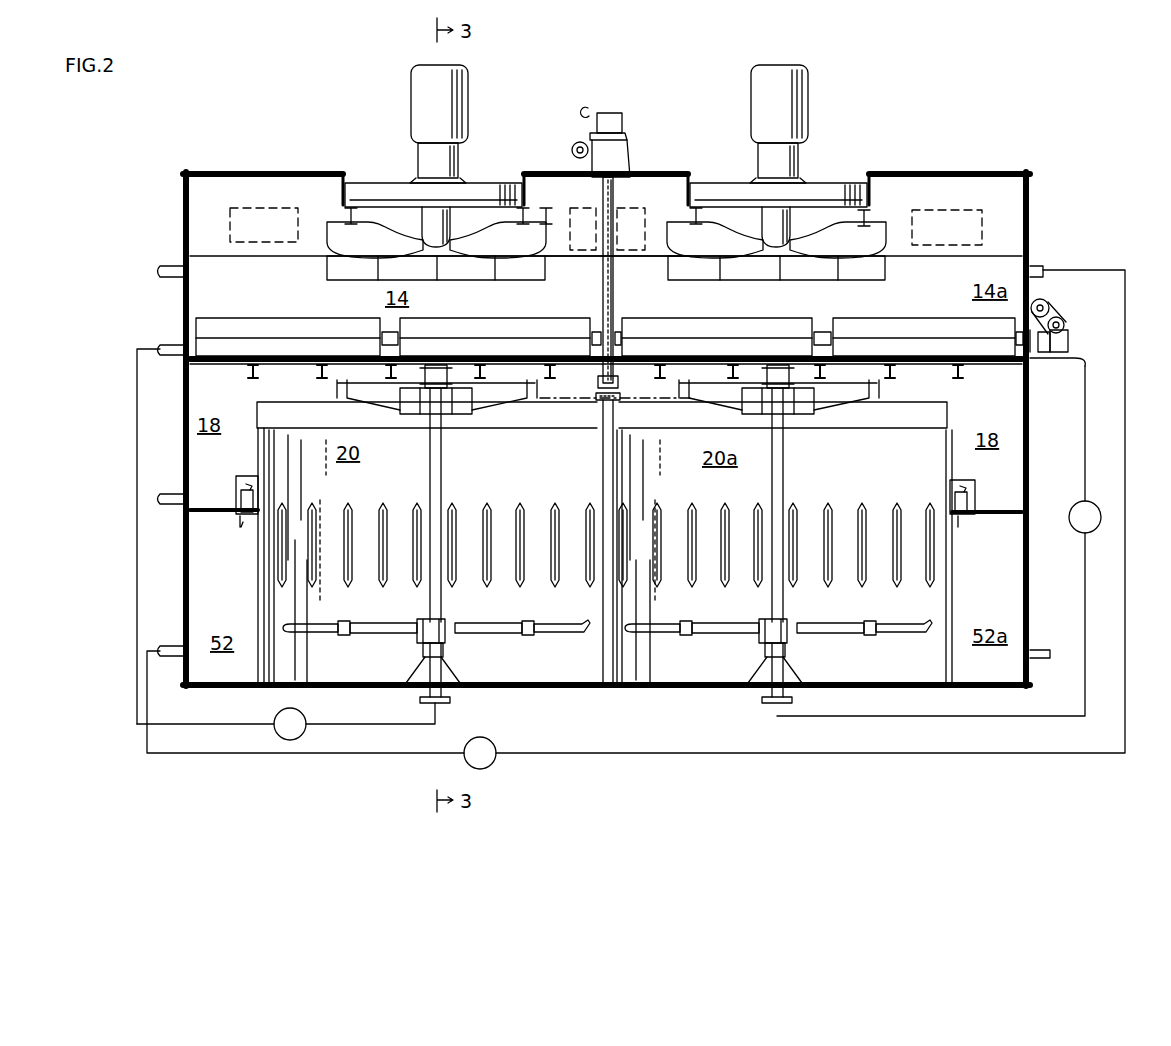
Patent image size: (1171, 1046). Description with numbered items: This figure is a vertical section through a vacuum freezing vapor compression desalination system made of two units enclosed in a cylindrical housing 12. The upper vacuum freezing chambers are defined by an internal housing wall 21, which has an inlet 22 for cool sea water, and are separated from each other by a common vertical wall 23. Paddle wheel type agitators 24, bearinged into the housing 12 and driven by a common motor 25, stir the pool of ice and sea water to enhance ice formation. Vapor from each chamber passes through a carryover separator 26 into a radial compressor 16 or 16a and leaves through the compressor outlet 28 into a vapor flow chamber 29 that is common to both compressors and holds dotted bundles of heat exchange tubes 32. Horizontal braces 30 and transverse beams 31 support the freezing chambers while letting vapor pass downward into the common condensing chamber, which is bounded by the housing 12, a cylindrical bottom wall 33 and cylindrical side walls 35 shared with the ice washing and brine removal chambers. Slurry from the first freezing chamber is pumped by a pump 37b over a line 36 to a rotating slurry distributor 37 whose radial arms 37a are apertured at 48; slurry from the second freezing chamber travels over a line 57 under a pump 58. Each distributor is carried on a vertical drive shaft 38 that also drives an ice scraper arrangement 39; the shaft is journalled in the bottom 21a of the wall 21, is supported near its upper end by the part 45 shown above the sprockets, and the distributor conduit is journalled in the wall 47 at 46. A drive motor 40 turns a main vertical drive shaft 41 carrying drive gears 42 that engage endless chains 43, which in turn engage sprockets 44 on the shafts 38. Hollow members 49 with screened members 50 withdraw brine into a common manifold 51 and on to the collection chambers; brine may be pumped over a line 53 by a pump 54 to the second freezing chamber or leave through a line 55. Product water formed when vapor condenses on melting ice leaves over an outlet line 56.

The housing 12 is at (1032, 406).
The vapor flow chamber 29 is at (203, 185).
The internal housing wall 21 is at (232, 258).
The carryover separator 26 is at (450, 282).
The heat exchange tubes 32 is at (230, 235).
The compressor 16 is at (450, 212).
The compressor 16a is at (790, 212).
The outlet 28 is at (328, 218).
The drive motor 40 is at (618, 158).
The common vertical wall 23 is at (600, 300).
The main vertical drive shaft 41 is at (616, 312).
The drive gears 42 is at (616, 388).
The endless chains 43 is at (556, 395).
The braces 30 is at (585, 258).
The paddle wheel type agitators 24 is at (250, 328).
The inlet 22 is at (170, 278).
The common motor 25 is at (1070, 340).
The line 57 is at (1078, 362).
The pump 58 is at (1102, 517).
The beams 31 is at (254, 380).
The bottom of the wall 21a is at (340, 366).
The shaft support 45 is at (425, 376).
The sprockets 44 is at (515, 382).
The ice scraper arrangement 39 is at (540, 432).
The vertical drive shaft 38 is at (443, 475).
The cylindrical side walls 35 is at (615, 478).
The hollow members 49 is at (290, 570).
The screened members 50 is at (313, 512).
The cylindrical bottom wall 33 is at (220, 515).
The common manifold 51 is at (234, 490).
The outlet line 56 is at (160, 499).
The line 36 is at (137, 570).
The rotating slurry distributor 37 is at (460, 616).
The apertures 48 is at (345, 625).
The radial arms 37a is at (314, 624).
The journal 46 is at (444, 672).
The pump 37b is at (305, 716).
The line 53 is at (270, 760).
The pump 54 is at (492, 740).
The wall 47 is at (640, 690).
The line 55 is at (1040, 650).